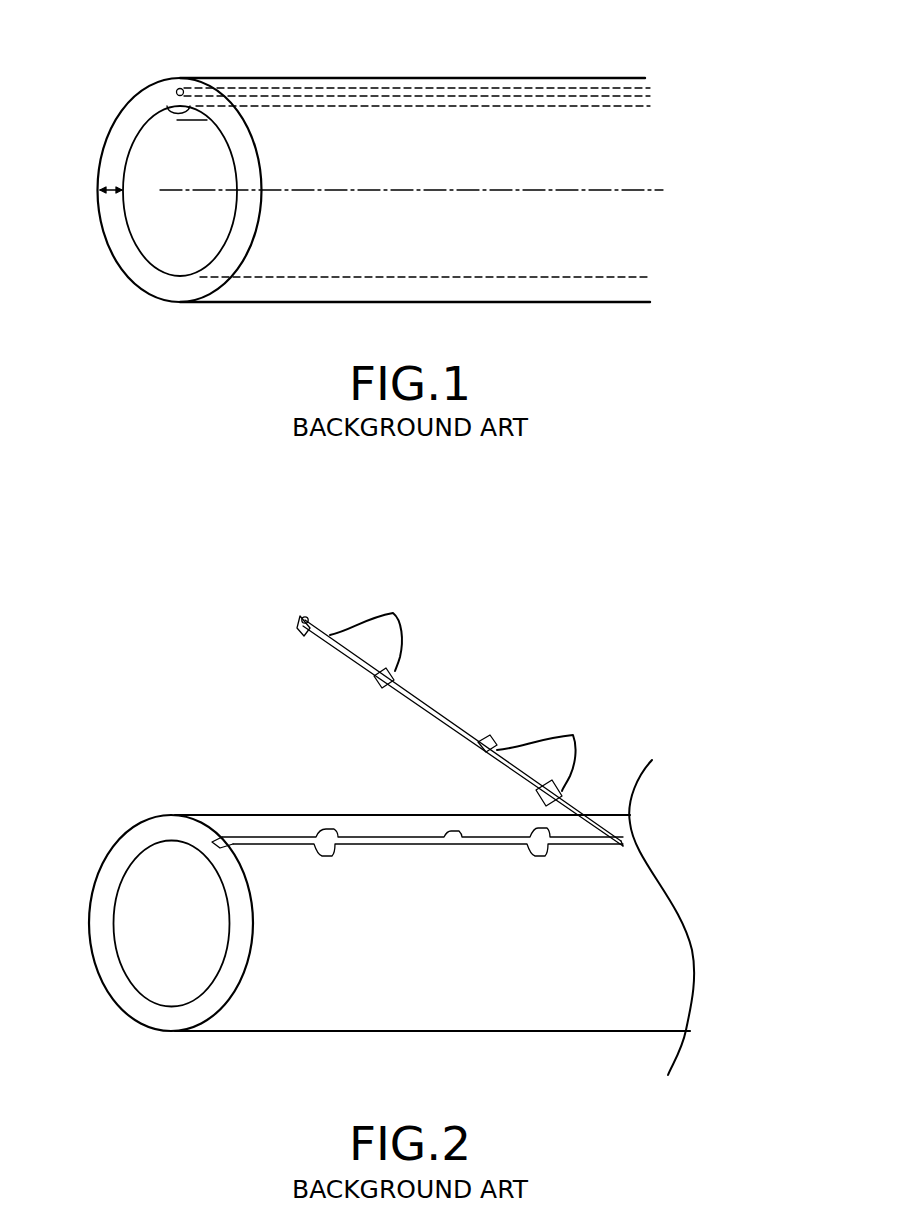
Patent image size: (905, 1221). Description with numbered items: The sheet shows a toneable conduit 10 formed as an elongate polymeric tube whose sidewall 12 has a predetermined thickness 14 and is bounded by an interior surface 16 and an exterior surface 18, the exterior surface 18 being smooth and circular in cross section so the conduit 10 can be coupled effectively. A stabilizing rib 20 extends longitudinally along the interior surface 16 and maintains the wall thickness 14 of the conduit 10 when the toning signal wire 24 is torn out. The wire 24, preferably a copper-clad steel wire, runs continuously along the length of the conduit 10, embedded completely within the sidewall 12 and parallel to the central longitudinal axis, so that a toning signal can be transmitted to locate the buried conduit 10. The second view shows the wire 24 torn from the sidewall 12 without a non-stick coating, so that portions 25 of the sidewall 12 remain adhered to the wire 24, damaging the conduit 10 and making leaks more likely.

In FIG. 1, the toneable conduit 10 is at (575, 303).
In FIG. 2, the toneable conduit 10 is at (470, 1033).
In FIG. 1, the sidewall 12 is at (158, 218).
In FIG. 2, the sidewall 12 is at (220, 991).
In FIG. 1, the thickness 14 is at (104, 196).
In FIG. 1, the interior surface 16 is at (143, 253).
In FIG. 1, the exterior surface 18 is at (134, 287).
In FIG. 1, the stabilizing rib 20 is at (165, 108).
In FIG. 2, the stabilizing rib 20 is at (205, 868).
In FIG. 1, the toning signal wire 24 is at (180, 88).
In FIG. 2, the toning signal wire 24 is at (437, 707).
In FIG. 2, the portions of the sidewall 25 is at (393, 613).